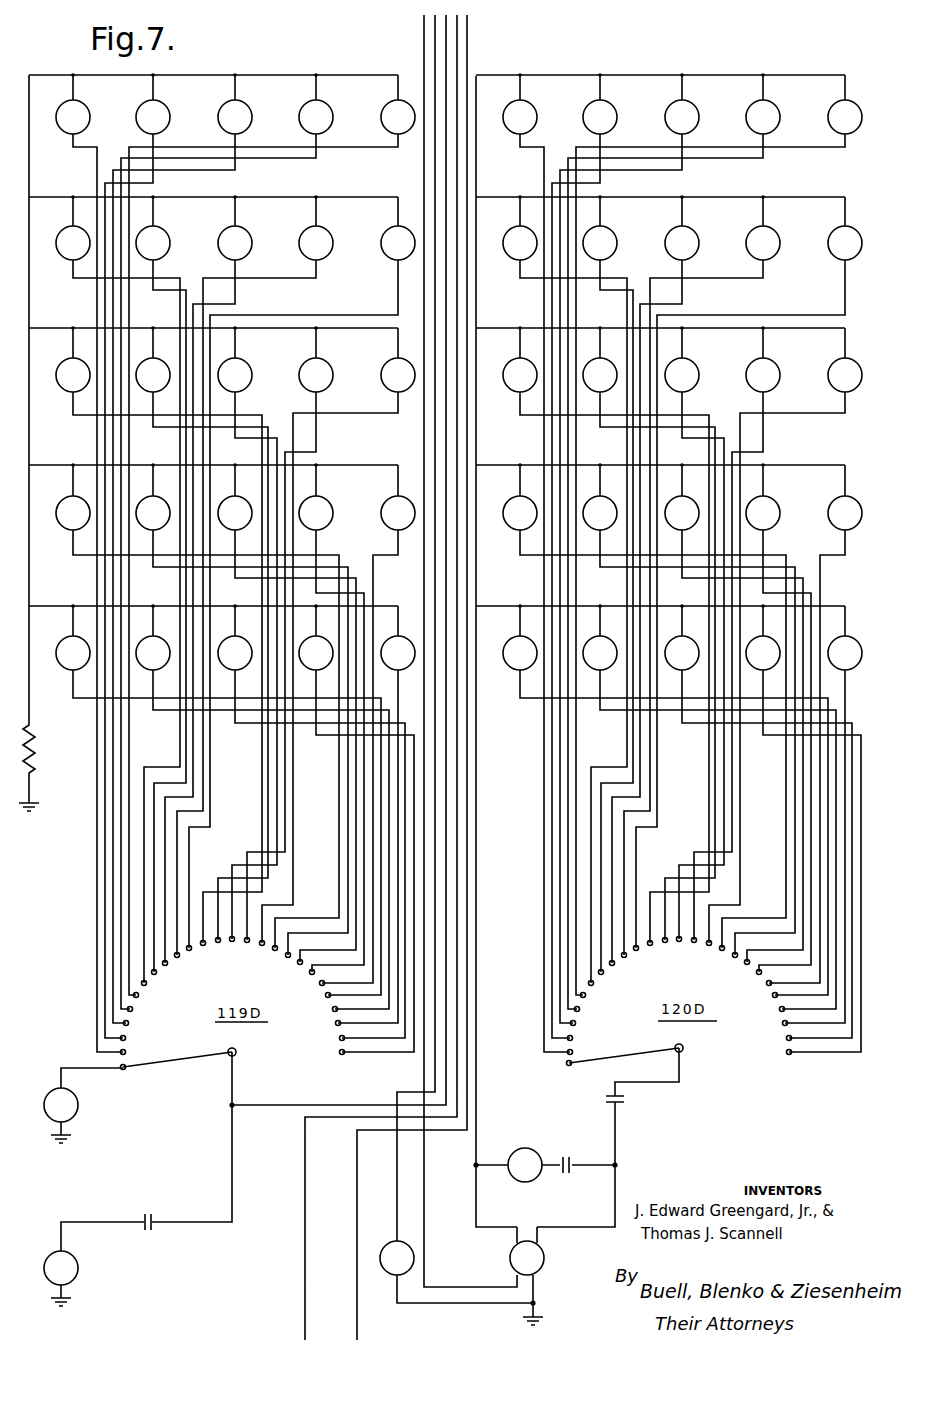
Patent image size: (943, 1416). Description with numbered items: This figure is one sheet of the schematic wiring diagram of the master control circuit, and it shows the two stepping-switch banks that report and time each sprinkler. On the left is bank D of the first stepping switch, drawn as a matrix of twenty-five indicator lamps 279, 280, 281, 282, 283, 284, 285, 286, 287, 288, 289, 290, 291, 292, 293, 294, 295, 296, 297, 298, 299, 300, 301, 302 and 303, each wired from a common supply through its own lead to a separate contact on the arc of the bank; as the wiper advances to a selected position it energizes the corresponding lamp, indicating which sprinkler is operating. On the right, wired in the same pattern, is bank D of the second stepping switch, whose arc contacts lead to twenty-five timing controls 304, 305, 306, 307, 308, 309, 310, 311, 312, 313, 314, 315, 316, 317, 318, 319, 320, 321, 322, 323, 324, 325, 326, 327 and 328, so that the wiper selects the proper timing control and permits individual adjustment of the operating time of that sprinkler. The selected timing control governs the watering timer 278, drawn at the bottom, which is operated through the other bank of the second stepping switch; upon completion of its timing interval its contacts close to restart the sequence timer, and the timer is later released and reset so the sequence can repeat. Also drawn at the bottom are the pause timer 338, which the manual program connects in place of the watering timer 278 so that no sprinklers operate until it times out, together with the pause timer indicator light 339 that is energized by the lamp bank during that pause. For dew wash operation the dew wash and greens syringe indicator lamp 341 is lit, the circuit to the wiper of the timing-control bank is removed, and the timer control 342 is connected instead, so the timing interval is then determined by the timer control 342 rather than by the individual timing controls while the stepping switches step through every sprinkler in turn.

The watering timer 278 is at (543, 1256).
The indicator lamp 279 is at (79, 110).
The indicator lamp 280 is at (159, 110).
The indicator lamp 281 is at (241, 110).
The indicator lamp 282 is at (322, 110).
The indicator lamp 283 is at (390, 121).
The indicator lamp 284 is at (70, 252).
The indicator lamp 285 is at (159, 236).
The indicator lamp 286 is at (241, 236).
The indicator lamp 287 is at (322, 236).
The indicator lamp 288 is at (390, 247).
The indicator lamp 289 is at (70, 384).
The indicator lamp 290 is at (151, 384).
The indicator lamp 291 is at (241, 368).
The indicator lamp 292 is at (322, 368).
The indicator lamp 293 is at (390, 379).
The indicator lamp 294 is at (69, 521).
The indicator lamp 295 is at (151, 522).
The indicator lamp 296 is at (237, 504).
The indicator lamp 297 is at (322, 506).
The indicator lamp 298 is at (390, 517).
The indicator lamp 299 is at (70, 662).
The indicator lamp 300 is at (151, 662).
The indicator lamp 301 is at (237, 644).
The indicator lamp 302 is at (315, 662).
The indicator lamp 303 is at (400, 644).
The timing control 304 is at (526, 110).
The timing control 305 is at (606, 110).
The timing control 306 is at (688, 110).
The timing control 307 is at (769, 110).
The timing control 308 is at (837, 121).
The timing control 309 is at (517, 252).
The timing control 310 is at (606, 236).
The timing control 311 is at (688, 236).
The timing control 312 is at (769, 236).
The timing control 313 is at (837, 247).
The timing control 314 is at (517, 384).
The timing control 315 is at (602, 366).
The timing control 316 is at (688, 368).
The timing control 317 is at (769, 368).
The timing control 318 is at (837, 379).
The timing control 319 is at (516, 521).
The timing control 320 is at (602, 504).
The timing control 321 is at (684, 504).
The timing control 322 is at (769, 506).
The timing control 323 is at (837, 517).
The timing control 324 is at (517, 662).
The timing control 325 is at (602, 644).
The timing control 326 is at (684, 644).
The timing control 327 is at (762, 662).
The timing control 328 is at (847, 644).
The pause timer 338 is at (414, 1258).
The pause timer indicator light 339 is at (79, 1105).
The dew wash and greens syringe indicator lamp 341 is at (79, 1268).
The timer control 342 is at (516, 1152).